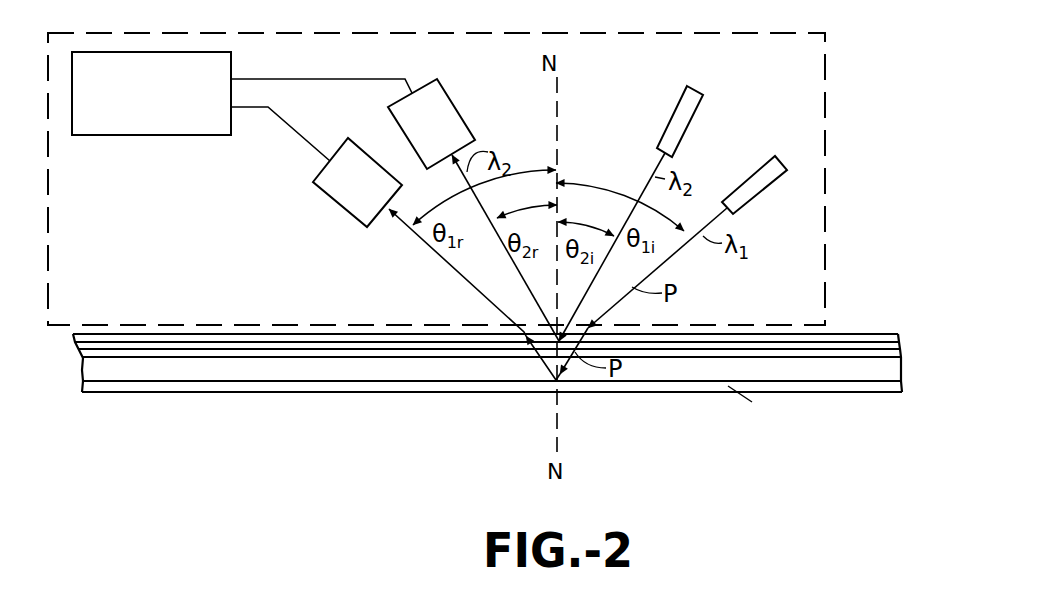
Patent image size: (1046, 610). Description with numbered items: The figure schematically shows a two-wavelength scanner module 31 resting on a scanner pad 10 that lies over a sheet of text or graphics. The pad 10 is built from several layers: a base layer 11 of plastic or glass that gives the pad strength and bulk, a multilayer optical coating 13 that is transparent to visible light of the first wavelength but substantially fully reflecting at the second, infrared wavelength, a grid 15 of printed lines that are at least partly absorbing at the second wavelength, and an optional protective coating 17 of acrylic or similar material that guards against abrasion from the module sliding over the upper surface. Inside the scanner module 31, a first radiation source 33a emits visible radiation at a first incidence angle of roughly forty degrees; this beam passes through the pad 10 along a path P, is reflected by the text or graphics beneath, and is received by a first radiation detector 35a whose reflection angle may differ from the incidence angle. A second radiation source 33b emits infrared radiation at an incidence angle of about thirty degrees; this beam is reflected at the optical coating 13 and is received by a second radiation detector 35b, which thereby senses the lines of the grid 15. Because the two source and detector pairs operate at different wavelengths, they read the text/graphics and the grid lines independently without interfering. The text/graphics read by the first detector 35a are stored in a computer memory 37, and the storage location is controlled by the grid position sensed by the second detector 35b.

The scanner pad apparatus 10 is at (905, 333).
The base layer 11 is at (883, 373).
The multilayer optical coating 13 is at (882, 352).
The grid 15 is at (872, 342).
The protective coating 17 is at (843, 338).
The scanner module 31 is at (834, 89).
The radiation source 33a is at (740, 197).
The radiation source 33b is at (683, 118).
The radiation detector 35a is at (337, 187).
The radiation detector 35b is at (440, 112).
The computer memory 37 is at (133, 127).